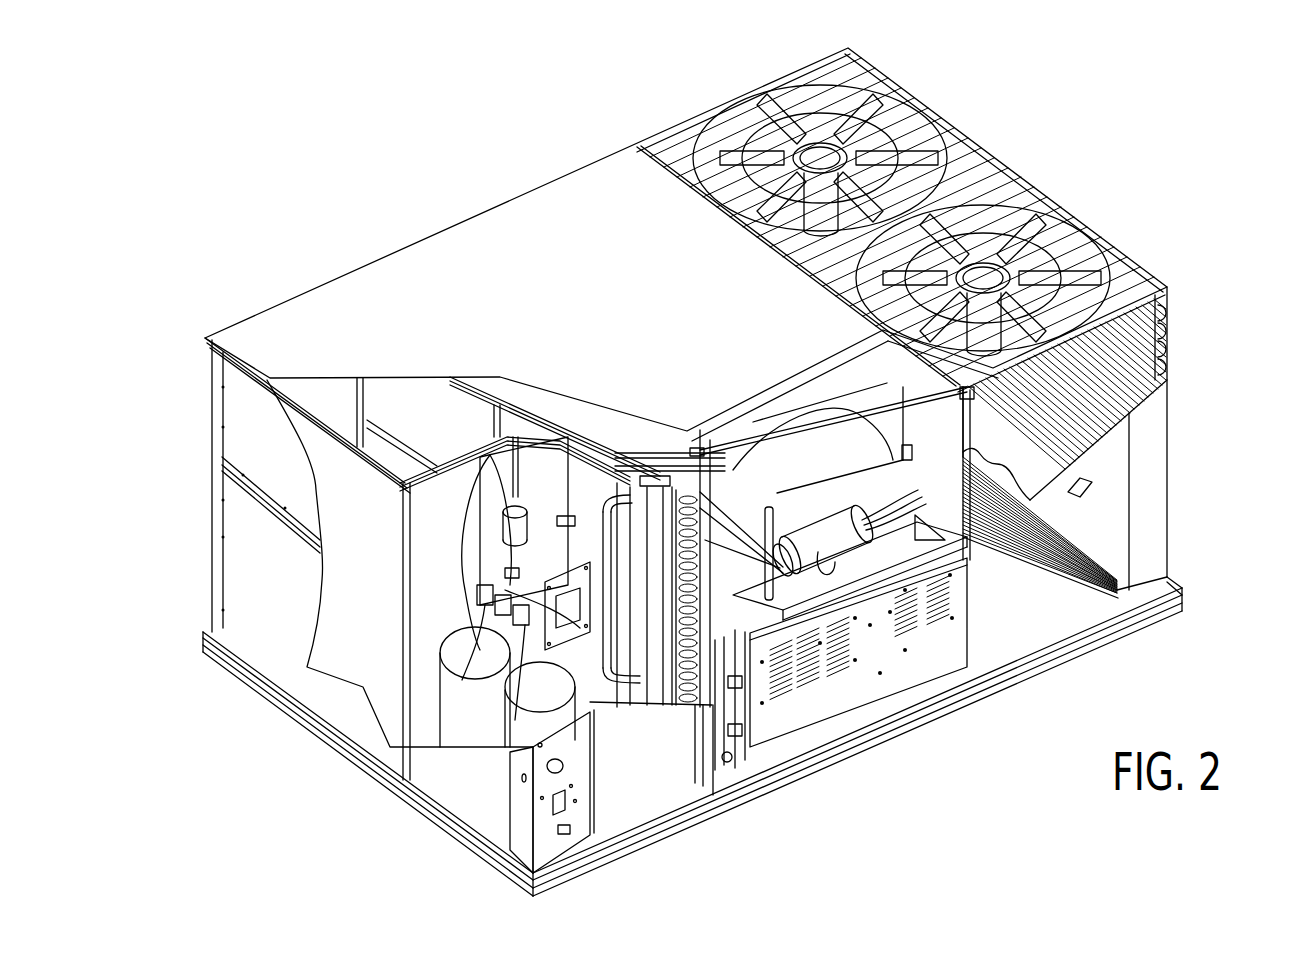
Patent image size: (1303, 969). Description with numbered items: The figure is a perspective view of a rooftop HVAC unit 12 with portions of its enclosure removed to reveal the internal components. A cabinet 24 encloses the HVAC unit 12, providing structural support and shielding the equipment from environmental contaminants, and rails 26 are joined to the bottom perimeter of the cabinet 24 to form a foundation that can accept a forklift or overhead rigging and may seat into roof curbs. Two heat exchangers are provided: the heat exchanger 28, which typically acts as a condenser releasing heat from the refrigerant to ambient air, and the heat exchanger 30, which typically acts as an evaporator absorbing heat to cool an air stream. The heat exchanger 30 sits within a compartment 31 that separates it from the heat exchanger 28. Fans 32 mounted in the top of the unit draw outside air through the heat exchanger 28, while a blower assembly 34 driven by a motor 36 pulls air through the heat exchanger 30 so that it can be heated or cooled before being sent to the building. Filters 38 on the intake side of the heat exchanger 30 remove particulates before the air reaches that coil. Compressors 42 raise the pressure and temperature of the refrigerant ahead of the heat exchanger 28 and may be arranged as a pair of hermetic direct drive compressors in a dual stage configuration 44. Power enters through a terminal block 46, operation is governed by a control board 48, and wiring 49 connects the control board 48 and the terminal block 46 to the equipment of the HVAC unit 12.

The HVAC unit 12 is at (396, 152).
The cabinet 24 is at (248, 600).
The rails 26 is at (276, 682).
The heat exchanger 28 is at (1168, 344).
The heat exchanger 30 is at (697, 713).
The compartment 31 is at (704, 528).
The fans 32 is at (1000, 240).
The blower assembly 34 is at (890, 484).
The motor 36 is at (823, 535).
The filters 38 is at (648, 515).
The compressors 42 is at (447, 683).
The dual stage configuration 44 is at (436, 636).
The terminal block 46 is at (527, 610).
The control board 48 is at (573, 592).
The wiring 49 is at (677, 500).